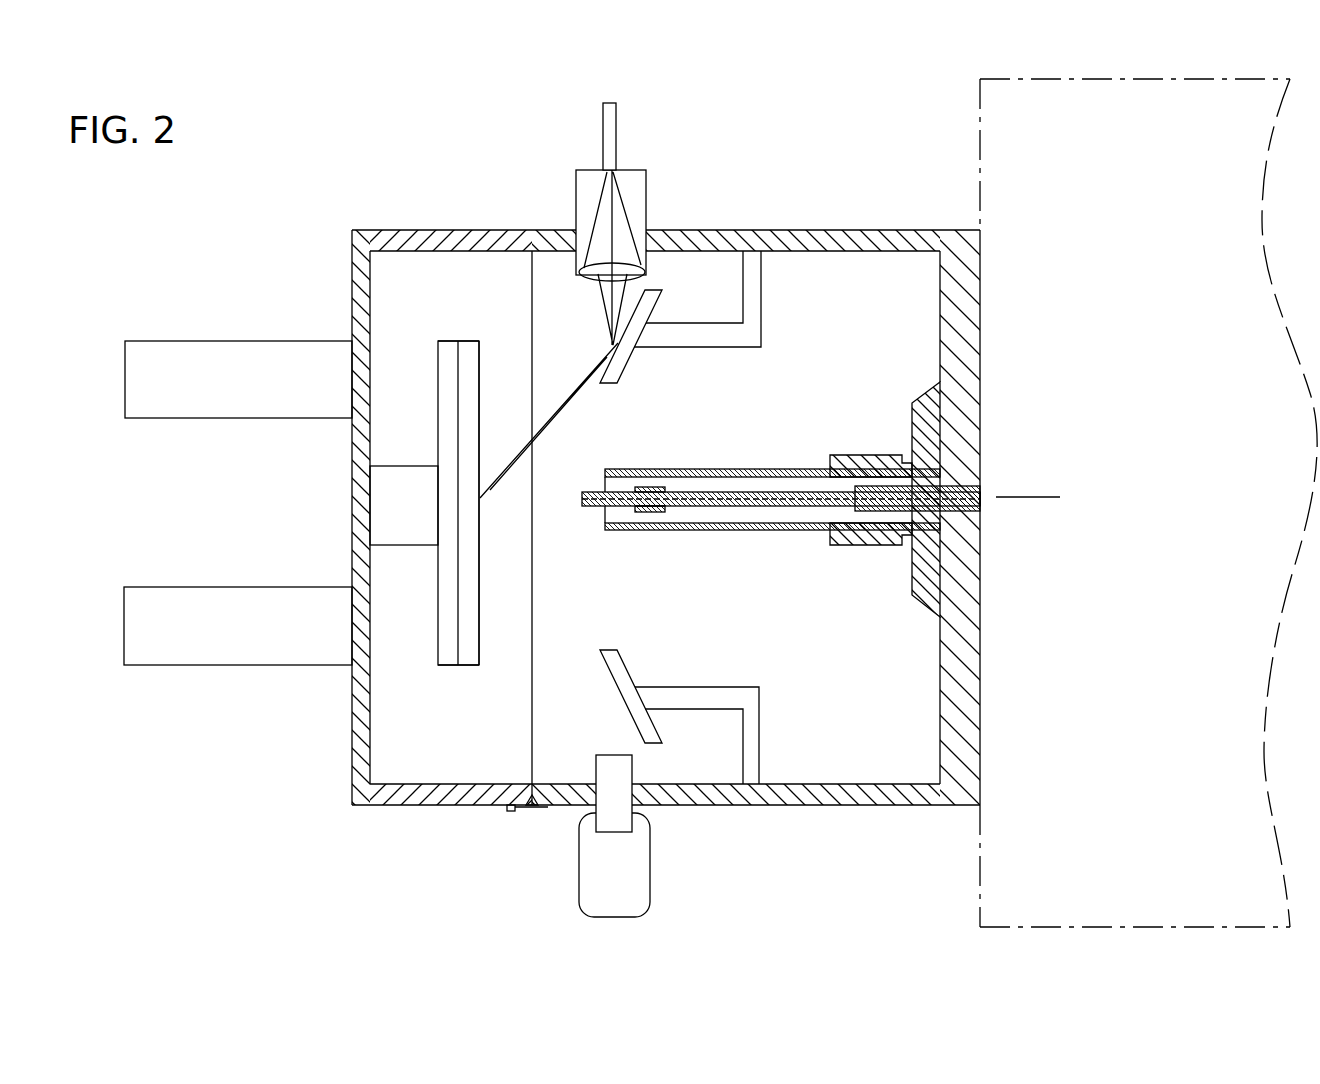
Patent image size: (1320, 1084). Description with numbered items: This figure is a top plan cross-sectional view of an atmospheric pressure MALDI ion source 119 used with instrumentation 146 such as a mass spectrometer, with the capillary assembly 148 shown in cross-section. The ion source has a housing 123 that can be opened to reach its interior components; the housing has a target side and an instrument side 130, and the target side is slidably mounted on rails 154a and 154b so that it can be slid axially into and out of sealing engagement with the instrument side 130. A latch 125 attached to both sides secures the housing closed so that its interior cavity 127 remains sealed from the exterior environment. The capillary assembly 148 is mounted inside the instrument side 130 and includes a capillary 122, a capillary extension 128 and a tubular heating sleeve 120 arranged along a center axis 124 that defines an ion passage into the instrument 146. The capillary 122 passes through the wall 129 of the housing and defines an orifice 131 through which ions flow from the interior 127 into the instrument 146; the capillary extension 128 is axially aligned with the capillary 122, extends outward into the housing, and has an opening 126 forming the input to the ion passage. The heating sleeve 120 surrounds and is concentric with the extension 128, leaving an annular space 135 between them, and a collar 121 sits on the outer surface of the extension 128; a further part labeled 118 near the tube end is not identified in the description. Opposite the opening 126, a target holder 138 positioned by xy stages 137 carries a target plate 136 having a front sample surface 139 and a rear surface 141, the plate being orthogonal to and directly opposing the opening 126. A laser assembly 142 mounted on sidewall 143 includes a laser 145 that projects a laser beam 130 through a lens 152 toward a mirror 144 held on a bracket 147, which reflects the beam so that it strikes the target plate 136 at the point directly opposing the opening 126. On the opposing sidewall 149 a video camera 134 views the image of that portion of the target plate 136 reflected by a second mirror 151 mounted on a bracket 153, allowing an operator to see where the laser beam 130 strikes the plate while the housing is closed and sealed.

The probe tube lower wall 118 is at (605, 523).
The ion source 119 is at (387, 228).
The heating sleeve 120 is at (777, 469).
The collar 121 is at (650, 513).
The capillary 122 is at (961, 486).
The housing 123 is at (352, 292).
The center axis 124 is at (1063, 521).
The latch 125 is at (507, 808).
The opening 126 is at (582, 500).
The interior cavity 127 is at (814, 783).
The capillary extension 128 is at (752, 492).
The wall 129 is at (982, 383).
The instrument side 130 is at (553, 407).
The orifice 131 is at (981, 497).
The video camera 134 is at (648, 863).
The annular space 135 is at (606, 484).
The target plate 136 is at (470, 340).
The xy stages 137 is at (405, 466).
The target holder 138 is at (452, 665).
The sample surface 139 is at (480, 650).
The rear surface 141 is at (458, 585).
The laser assembly 142 is at (633, 168).
The sidewall 143 is at (870, 230).
The mirror 144 is at (658, 287).
The laser 145 is at (603, 122).
The instrumentation 146 is at (979, 880).
The bracket 147 is at (762, 305).
The capillary assembly 148 is at (755, 530).
The sidewall 149 is at (392, 808).
The mirror 151 is at (625, 668).
The lens 152 is at (633, 265).
The bracket 153 is at (765, 707).
The rail 154a is at (182, 418).
The rail 154b is at (178, 665).